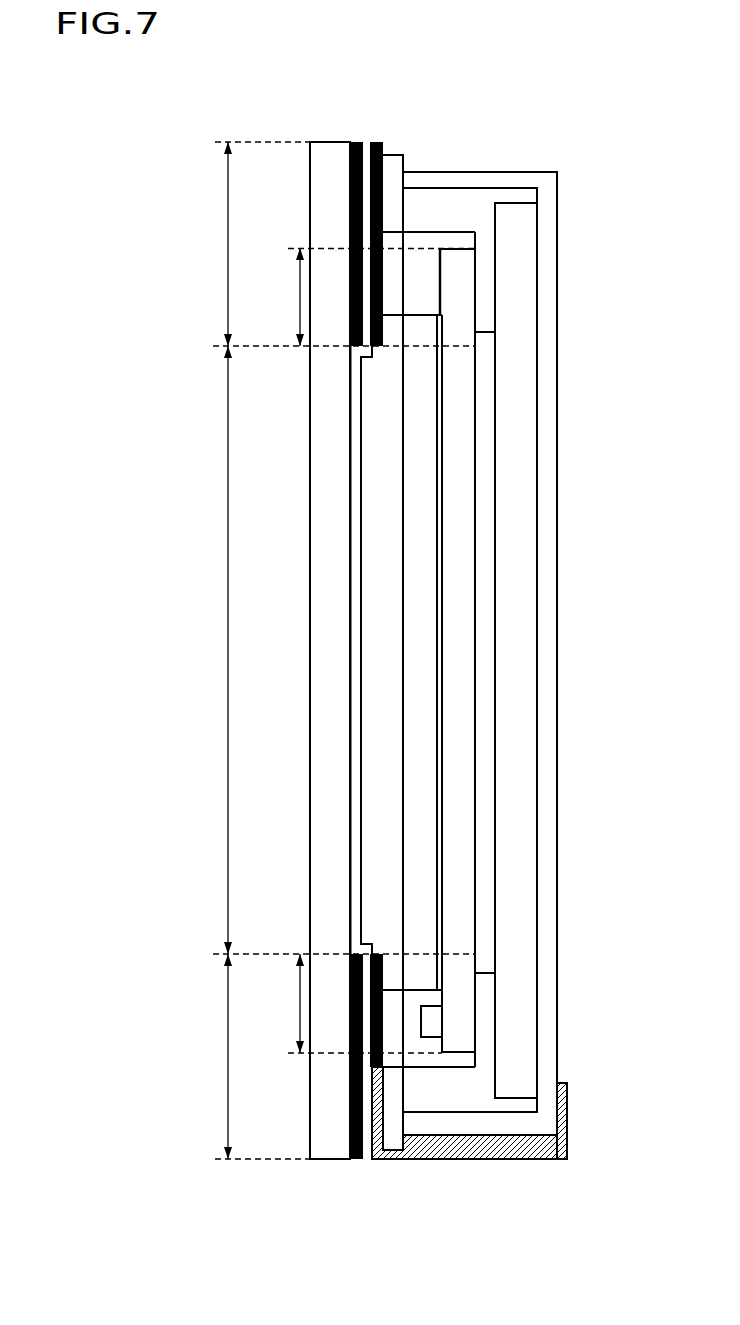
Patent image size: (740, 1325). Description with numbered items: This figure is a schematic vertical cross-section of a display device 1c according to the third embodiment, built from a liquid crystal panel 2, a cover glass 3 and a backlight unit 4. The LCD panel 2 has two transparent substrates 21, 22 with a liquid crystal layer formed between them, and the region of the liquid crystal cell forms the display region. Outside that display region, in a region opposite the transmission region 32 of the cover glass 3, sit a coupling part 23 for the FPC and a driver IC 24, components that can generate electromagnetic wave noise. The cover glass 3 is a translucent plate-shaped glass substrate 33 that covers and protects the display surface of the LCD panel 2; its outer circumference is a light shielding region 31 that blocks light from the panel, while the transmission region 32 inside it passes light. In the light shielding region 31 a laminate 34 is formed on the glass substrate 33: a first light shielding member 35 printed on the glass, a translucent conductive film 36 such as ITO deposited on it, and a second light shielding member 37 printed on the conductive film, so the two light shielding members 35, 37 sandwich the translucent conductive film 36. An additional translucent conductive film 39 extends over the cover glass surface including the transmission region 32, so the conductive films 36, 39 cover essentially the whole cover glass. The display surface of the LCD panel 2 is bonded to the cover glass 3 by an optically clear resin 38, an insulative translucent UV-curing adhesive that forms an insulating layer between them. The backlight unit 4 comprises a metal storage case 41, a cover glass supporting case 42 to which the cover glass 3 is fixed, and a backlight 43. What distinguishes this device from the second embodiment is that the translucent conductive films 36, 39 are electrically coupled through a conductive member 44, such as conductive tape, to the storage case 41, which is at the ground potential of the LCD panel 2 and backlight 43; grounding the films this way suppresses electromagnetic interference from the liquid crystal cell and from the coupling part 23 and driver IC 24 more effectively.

The display device 1c is at (616, 50).
The liquid crystal panel 2 is at (490, 1215).
The cover glass 3 is at (393, 47).
The backlight unit 4 is at (453, 88).
The transparent substrate 21 is at (412, 983).
The transparent substrate 22 is at (455, 1045).
The coupling part 23 is at (432, 1020).
The driver IC 24 is at (431, 1021).
The light shielding region 31 is at (216, 650).
The transmission region 32 is at (216, 650).
The glass substrate 33 is at (330, 148).
The laminate 34 is at (290, 92).
The first light shielding member 35 is at (353, 141).
The translucent conductive film 36 is at (366, 141).
The second light shielding member 37 is at (376, 141).
The optically clear resin 38 is at (377, 627).
The translucent conductive film 39 is at (355, 652).
The storage case 41 is at (480, 172).
The cover glass supporting case 42 is at (493, 193).
The backlight 43 is at (517, 200).
The conductive member 44 is at (553, 1160).